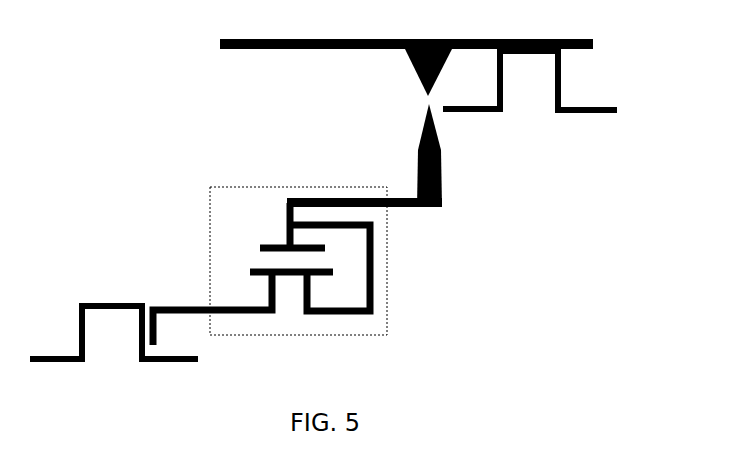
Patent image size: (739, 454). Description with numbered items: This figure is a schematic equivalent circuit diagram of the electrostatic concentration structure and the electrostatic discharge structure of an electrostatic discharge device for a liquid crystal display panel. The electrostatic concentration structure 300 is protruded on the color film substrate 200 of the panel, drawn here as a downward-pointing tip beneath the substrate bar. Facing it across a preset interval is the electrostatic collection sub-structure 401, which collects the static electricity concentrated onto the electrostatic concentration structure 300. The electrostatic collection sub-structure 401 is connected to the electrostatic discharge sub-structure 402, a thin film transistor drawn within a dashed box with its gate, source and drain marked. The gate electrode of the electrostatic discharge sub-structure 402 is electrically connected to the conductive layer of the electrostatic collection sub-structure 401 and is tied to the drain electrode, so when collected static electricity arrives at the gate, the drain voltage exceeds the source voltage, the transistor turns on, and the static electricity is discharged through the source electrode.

The color film substrate 200 is at (220, 42).
The electrostatic concentration structure 300 is at (414, 78).
The electrostatic collection sub-structure 401 is at (445, 205).
The electrostatic discharge sub-structure 402 is at (208, 248).